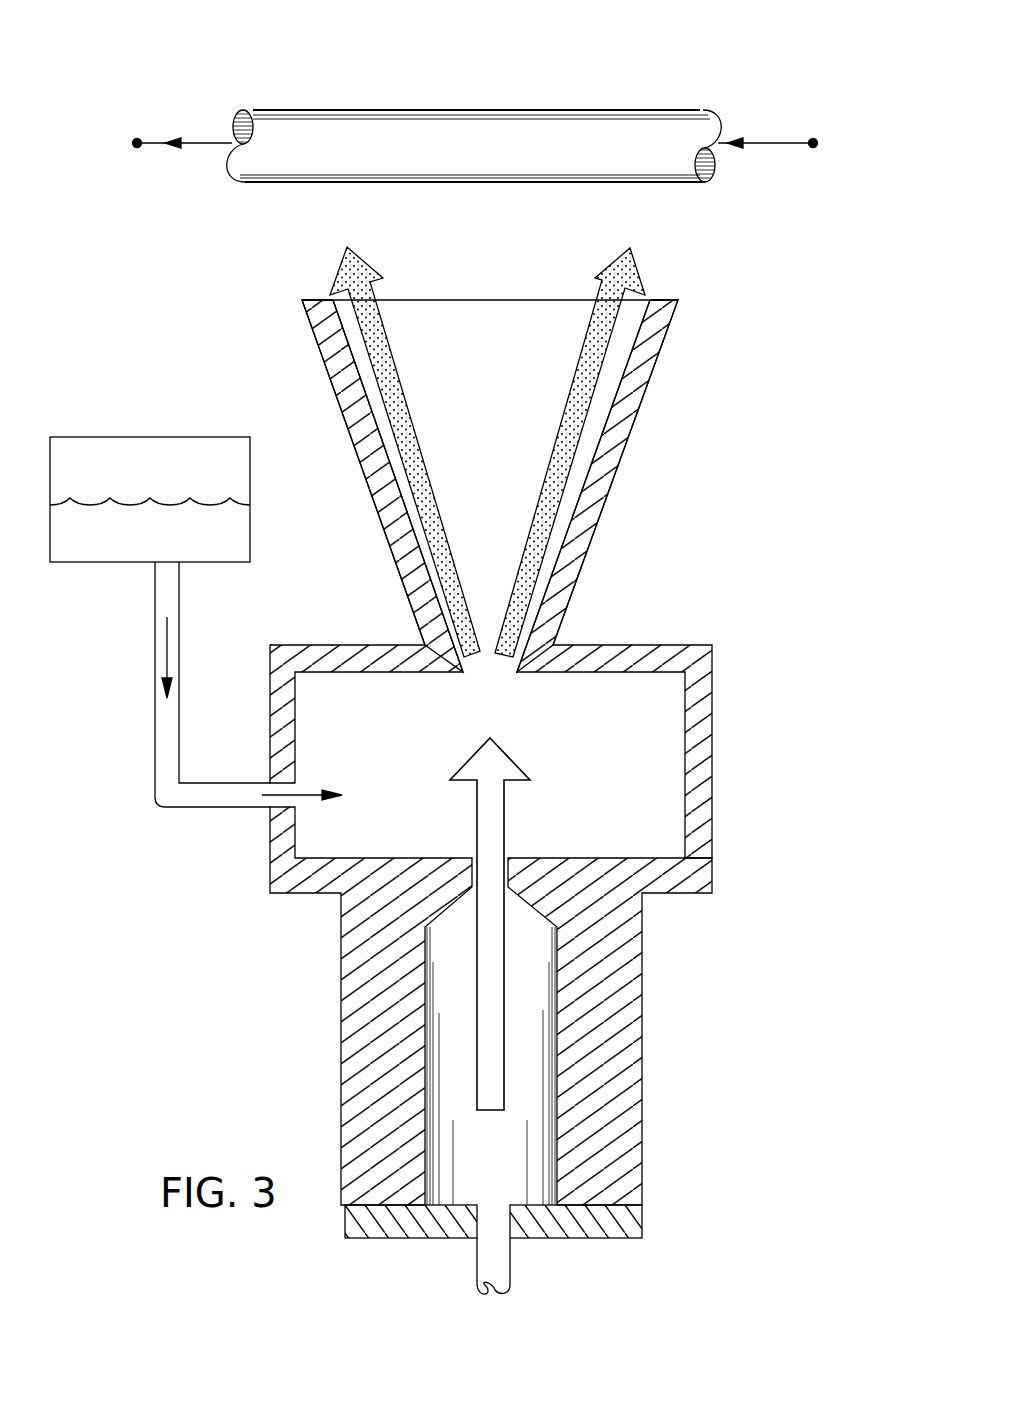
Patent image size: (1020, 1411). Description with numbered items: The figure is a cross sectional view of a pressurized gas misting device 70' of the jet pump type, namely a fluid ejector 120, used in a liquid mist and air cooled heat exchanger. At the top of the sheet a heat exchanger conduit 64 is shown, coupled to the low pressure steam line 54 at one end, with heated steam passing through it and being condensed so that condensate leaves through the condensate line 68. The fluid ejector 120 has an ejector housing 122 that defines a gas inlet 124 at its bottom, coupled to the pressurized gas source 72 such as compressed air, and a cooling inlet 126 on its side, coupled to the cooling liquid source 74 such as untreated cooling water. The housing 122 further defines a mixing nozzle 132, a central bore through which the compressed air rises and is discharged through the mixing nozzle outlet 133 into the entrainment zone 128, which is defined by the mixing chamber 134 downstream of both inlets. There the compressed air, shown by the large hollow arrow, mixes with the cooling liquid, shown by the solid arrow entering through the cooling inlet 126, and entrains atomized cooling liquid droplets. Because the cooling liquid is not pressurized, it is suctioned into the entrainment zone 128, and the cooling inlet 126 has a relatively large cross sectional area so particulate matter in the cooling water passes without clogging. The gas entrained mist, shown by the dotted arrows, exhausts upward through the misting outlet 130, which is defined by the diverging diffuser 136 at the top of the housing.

The heat exchanger conduit 64 is at (310, 128).
The condensate line 68 is at (176, 159).
The low pressure steam line 54 is at (774, 159).
The misting outlet 130 is at (497, 332).
The cooling liquid source 74 is at (205, 473).
The diffuser 136 is at (418, 587).
The mixing nozzle outlet 133 is at (503, 865).
The mixing chamber 134 is at (684, 743).
The entrainment zone 128 is at (637, 793).
The cooling inlet 126 is at (283, 797).
The fluid ejector 120 is at (525, 815).
The ejector housing 122 is at (612, 1008).
The mixing nozzle 132 is at (558, 1057).
The pressurized gas source 72 is at (490, 1267).
The gas inlet 124 is at (510, 1222).
The pressurized gas misting device 70' is at (525, 815).